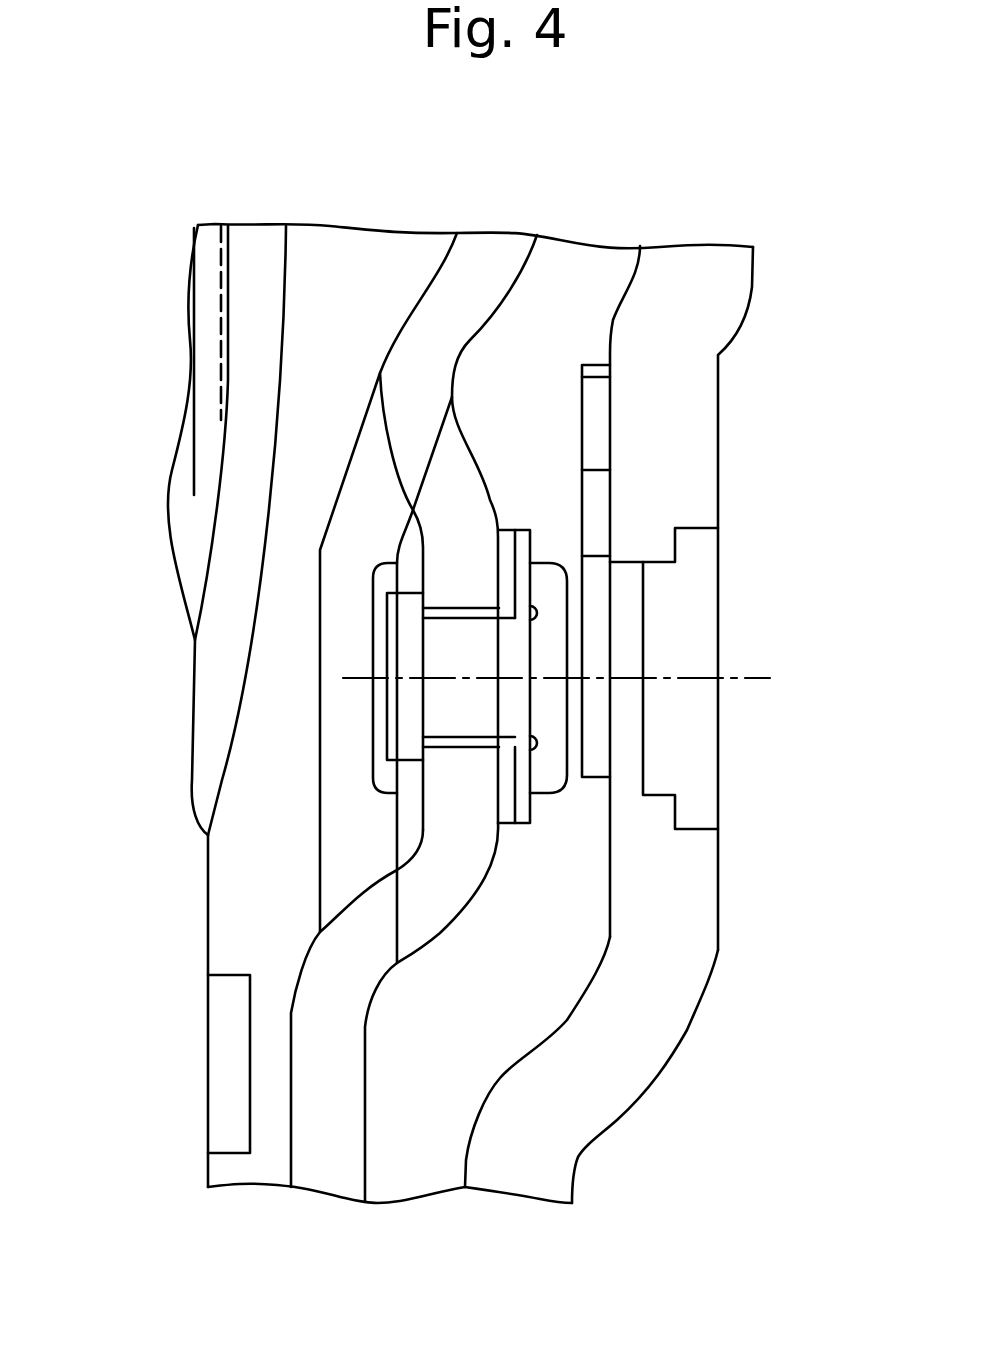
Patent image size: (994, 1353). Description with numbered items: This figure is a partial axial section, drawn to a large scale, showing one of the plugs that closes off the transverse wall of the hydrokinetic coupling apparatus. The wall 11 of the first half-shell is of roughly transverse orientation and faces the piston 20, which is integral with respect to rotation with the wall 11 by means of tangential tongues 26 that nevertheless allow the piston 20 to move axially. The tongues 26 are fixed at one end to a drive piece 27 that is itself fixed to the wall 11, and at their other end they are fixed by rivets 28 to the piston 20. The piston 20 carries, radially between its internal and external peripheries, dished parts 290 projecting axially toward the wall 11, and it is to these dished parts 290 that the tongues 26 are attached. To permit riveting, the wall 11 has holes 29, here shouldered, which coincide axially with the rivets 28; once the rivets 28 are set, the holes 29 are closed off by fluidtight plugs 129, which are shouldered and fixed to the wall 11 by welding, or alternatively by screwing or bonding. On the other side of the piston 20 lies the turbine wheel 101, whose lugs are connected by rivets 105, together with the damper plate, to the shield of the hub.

The wall 11 is at (703, 308).
The piston 20 is at (325, 1170).
The tangential tongues 26 is at (523, 825).
The drive piece 27 is at (598, 425).
The rivets 28 is at (552, 768).
The holes 29 is at (637, 563).
The turbine wheel 101 is at (258, 258).
The rivets 105 is at (225, 1063).
The fluidtight plugs 129 is at (683, 643).
The dished parts 290 is at (468, 503).